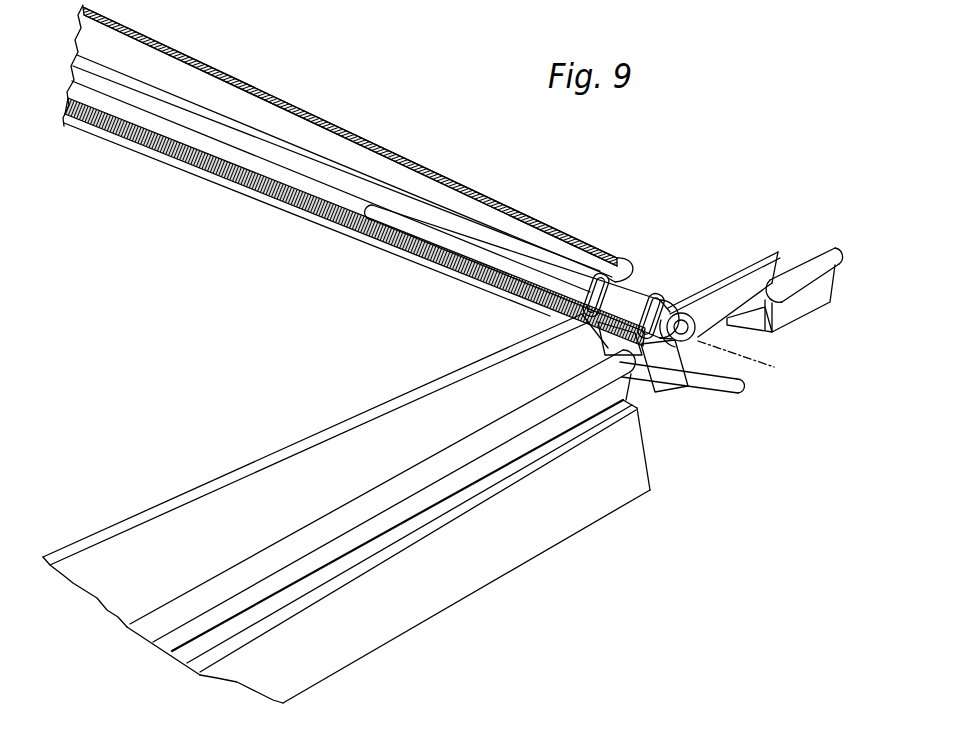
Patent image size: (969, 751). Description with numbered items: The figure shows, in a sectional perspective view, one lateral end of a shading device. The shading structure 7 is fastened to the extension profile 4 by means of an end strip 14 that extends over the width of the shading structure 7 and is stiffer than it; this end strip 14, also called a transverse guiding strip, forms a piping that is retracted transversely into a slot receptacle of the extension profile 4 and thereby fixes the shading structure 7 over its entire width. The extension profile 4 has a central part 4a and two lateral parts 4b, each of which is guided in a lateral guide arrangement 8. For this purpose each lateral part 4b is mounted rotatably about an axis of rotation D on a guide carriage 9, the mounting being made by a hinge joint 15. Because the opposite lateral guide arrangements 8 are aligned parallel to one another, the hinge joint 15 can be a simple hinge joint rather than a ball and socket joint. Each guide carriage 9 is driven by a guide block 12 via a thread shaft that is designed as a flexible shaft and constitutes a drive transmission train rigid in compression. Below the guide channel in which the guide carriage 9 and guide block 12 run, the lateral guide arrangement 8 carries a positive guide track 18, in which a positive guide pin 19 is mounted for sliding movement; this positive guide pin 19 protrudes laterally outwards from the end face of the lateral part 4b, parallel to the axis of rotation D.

The extension profile 4 is at (361, 118).
The central part 4a is at (370, 209).
The lateral part 4b is at (641, 281).
The shading structure 7 is at (449, 262).
The lateral guide arrangement 8 is at (311, 488).
The guide carriage 9 is at (733, 275).
The guide block 12 is at (807, 245).
The end strip 14 is at (665, 377).
The hinge joint 15 is at (687, 306).
The positive guide track 18 is at (515, 468).
The positive guide pin 19 is at (707, 388).
The axis of rotation D is at (758, 358).